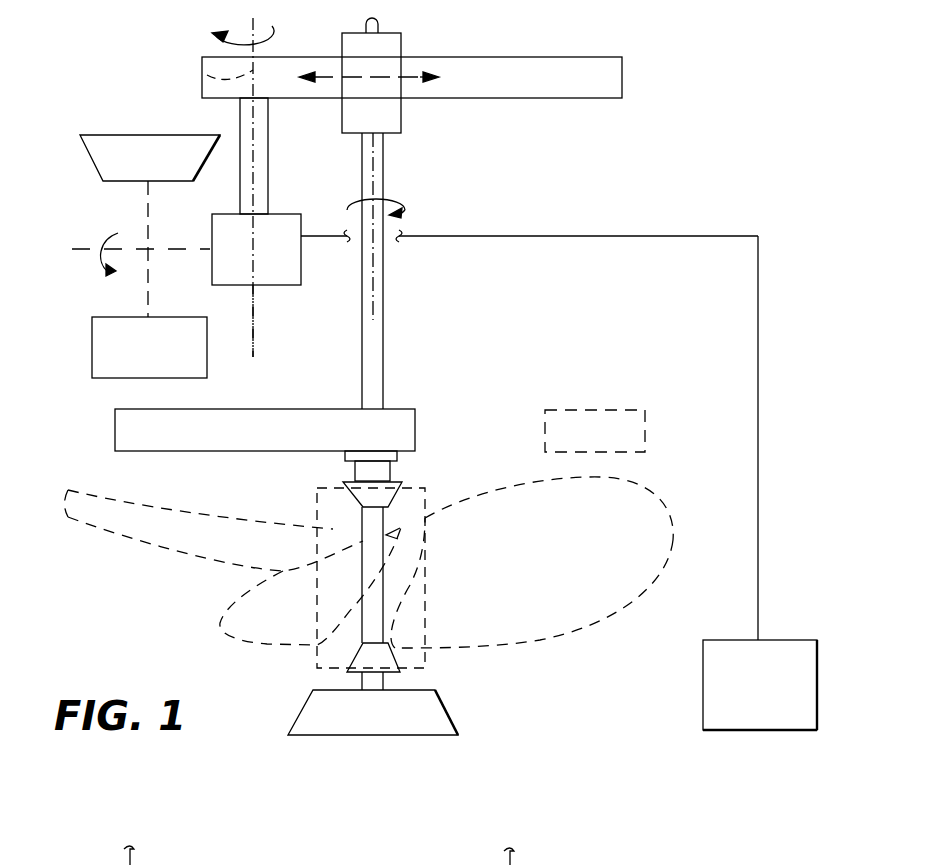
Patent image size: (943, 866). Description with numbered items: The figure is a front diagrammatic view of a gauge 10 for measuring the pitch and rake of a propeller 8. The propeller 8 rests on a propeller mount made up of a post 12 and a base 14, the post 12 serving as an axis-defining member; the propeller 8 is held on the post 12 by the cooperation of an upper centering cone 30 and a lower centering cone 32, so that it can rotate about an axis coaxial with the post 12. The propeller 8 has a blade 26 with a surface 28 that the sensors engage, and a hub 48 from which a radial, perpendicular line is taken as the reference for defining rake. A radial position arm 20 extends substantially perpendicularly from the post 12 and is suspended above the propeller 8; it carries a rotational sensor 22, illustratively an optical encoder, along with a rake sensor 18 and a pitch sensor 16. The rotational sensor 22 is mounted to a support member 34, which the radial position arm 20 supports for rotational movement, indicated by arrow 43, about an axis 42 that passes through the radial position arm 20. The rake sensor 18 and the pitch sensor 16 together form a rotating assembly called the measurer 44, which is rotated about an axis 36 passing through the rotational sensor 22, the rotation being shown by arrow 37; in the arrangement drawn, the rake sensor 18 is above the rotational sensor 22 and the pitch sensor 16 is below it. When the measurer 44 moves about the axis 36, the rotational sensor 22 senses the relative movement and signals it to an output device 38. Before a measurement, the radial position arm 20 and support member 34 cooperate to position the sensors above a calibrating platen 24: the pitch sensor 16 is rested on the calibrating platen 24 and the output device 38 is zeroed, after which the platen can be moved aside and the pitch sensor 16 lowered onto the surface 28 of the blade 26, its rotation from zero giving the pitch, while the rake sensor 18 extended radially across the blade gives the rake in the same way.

The propeller 8 is at (682, 560).
The gauge 10 is at (692, 112).
The post 12 is at (378, 360).
The base 14 is at (356, 722).
The pitch sensor 16 is at (133, 358).
The rake sensor 18 is at (130, 172).
The radial position arm 20 is at (552, 64).
The rotational sensor 22 is at (272, 261).
The calibrating platen 24 is at (250, 441).
The propeller blade 26 is at (592, 588).
The surface 28 is at (647, 494).
The upper centering cone 30 is at (389, 486).
The lower centering cone 32 is at (382, 663).
The support member 34 is at (241, 128).
The axis 36 is at (85, 254).
The arrow 37 is at (118, 233).
The output device 38 is at (738, 701).
The axis 42 is at (207, 75).
The arrow 43 is at (272, 30).
The measurer 44 is at (80, 226).
The hub 48 is at (327, 648).